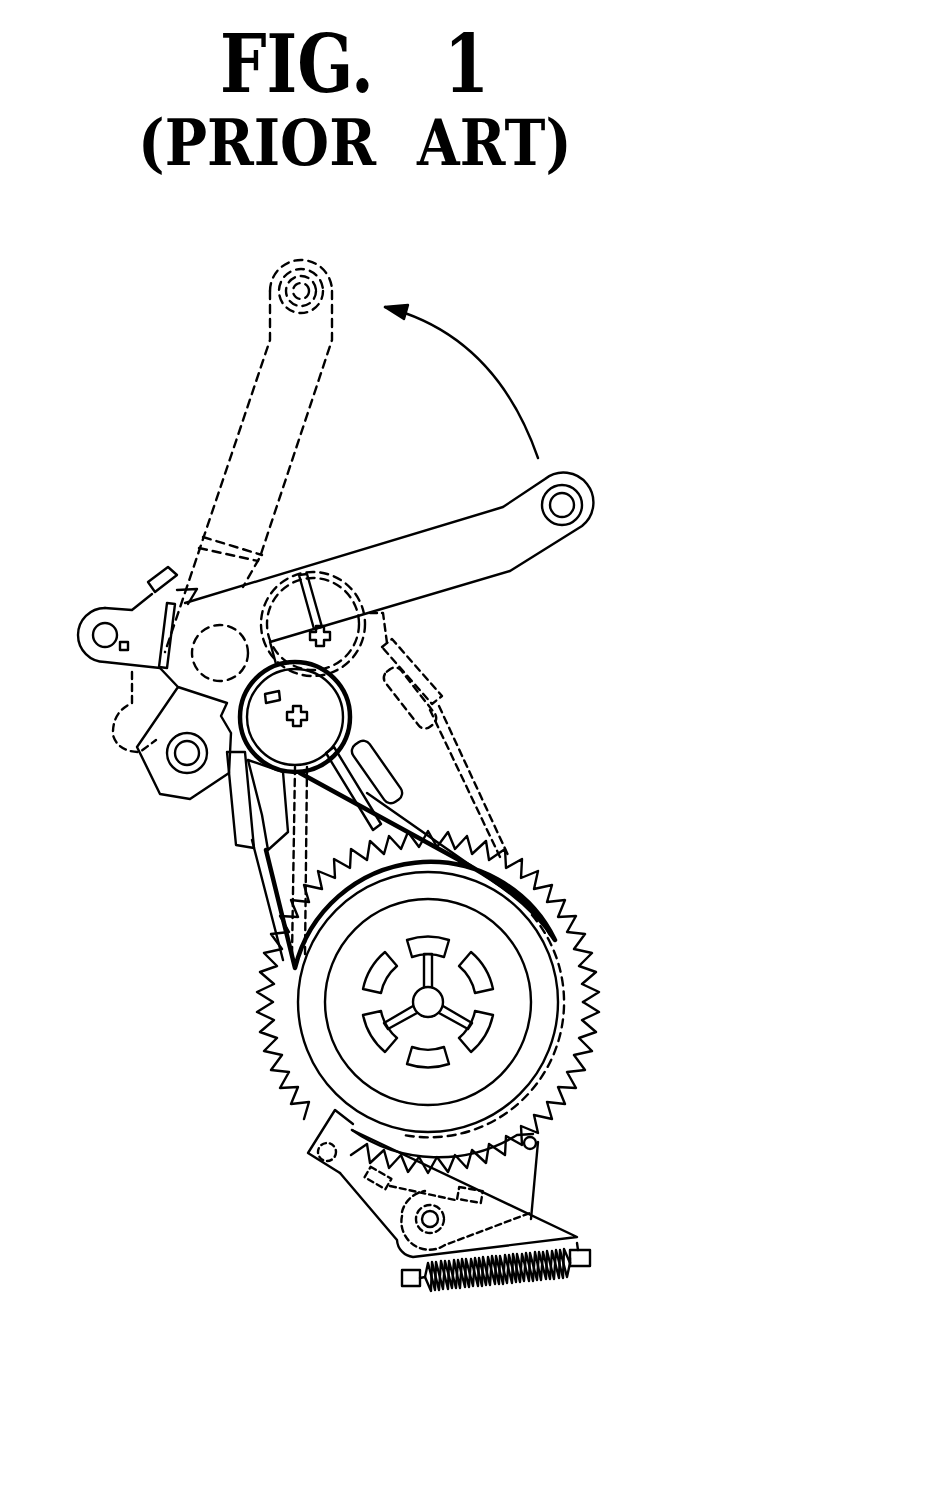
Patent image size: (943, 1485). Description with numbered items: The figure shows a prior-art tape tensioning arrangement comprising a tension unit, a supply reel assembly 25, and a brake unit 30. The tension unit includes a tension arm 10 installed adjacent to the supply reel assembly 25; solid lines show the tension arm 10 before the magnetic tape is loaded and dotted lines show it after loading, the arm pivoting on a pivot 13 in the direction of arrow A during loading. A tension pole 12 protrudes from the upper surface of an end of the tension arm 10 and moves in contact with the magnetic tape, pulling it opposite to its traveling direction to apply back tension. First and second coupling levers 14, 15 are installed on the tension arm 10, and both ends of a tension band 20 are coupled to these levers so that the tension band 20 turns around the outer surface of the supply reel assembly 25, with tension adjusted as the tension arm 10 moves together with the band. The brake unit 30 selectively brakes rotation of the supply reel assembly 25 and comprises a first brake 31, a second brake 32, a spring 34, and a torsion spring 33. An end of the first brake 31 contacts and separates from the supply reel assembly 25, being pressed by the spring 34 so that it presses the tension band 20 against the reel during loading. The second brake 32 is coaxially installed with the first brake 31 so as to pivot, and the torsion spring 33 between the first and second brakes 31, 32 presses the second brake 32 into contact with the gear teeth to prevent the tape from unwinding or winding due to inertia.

The tension arm 10 is at (455, 538).
The tension pole 12 is at (557, 473).
The pivot 13 is at (158, 782).
The first coupling lever 14 is at (233, 830).
The second coupling lever 15 is at (387, 757).
The tension band 20 is at (507, 853).
The supply reel assembly 25 is at (540, 972).
The brake unit 30 is at (439, 1243).
The first brake 31 is at (333, 1173).
The second brake 32 is at (527, 1172).
The torsion spring 33 is at (390, 1248).
The spring 34 is at (507, 1280).